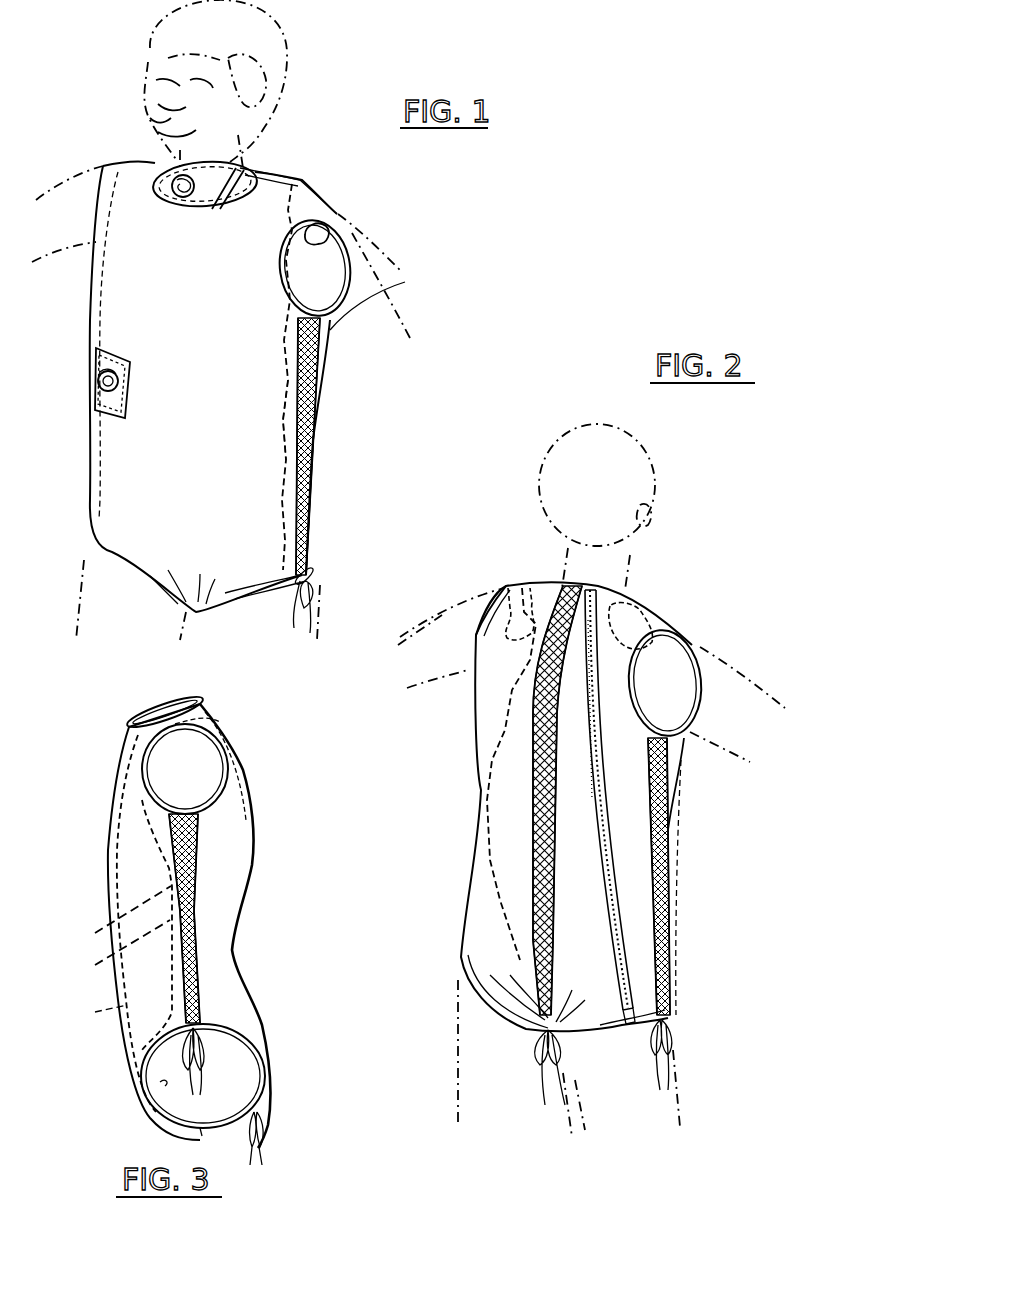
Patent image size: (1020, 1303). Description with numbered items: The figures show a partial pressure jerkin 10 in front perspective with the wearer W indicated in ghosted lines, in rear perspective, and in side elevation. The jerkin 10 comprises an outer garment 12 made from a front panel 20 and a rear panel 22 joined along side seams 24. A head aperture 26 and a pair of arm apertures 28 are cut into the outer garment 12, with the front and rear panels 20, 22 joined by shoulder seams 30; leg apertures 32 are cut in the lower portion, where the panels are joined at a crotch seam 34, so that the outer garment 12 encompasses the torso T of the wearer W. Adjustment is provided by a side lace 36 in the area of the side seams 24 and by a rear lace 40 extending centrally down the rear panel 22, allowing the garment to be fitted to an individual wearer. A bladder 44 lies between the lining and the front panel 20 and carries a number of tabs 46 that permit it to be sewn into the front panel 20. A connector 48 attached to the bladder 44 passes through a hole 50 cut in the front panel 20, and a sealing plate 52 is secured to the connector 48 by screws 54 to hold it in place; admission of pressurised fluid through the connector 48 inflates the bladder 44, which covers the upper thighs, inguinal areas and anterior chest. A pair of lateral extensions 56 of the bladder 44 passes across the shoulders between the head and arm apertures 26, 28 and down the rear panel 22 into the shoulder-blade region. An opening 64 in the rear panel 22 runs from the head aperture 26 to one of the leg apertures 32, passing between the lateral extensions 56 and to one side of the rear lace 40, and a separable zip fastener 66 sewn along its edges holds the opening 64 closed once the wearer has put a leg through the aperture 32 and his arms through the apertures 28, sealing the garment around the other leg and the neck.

In FIG. 1, the partial pressure jerkin 10 is at (322, 435).
In FIG. 2, the partial pressure jerkin 10 is at (576, 806).
In FIG. 3, the partial pressure jerkin 10 is at (248, 912).
In FIG. 3, the outer garment 12 is at (120, 748).
In FIG. 1, the front panel 20 is at (239, 353).
In FIG. 3, the front panel 20 is at (125, 860).
In FIG. 1, the rear panel 22 is at (322, 372).
In FIG. 3, the rear panel 22 is at (228, 864).
In FIG. 3, the side seams 24 is at (185, 814).
In FIG. 1, the head aperture 26 is at (190, 216).
In FIG. 3, the head aperture 26 is at (150, 708).
In FIG. 1, the arm apertures 28 is at (278, 296).
In FIG. 3, the arm apertures 28 is at (212, 750).
In FIG. 1, the shoulder seams 30 is at (290, 193).
In FIG. 3, the shoulder seams 30 is at (205, 718).
In FIG. 3, the leg apertures 32 is at (160, 1090).
In FIG. 3, the crotch seam 34 is at (200, 1140).
In FIG. 1, the side lace 36 is at (375, 298).
In FIG. 2, the side lace 36 is at (678, 780).
In FIG. 2, the rear lace 40 is at (533, 772).
In FIG. 1, the bladder 44 is at (300, 480).
In FIG. 2, the bladder 44 is at (488, 735).
In FIG. 3, the bladder 44 is at (95, 1014).
In FIG. 1, the tabs 46 is at (302, 525).
In FIG. 3, the tabs 46 is at (100, 960).
In FIG. 1, the connector 48 is at (95, 362).
In FIG. 1, the hole 50 is at (120, 362).
In FIG. 1, the sealing plate 52 is at (122, 400).
In FIG. 1, the screws 54 is at (93, 412).
In FIG. 1, the lateral extensions 56 is at (170, 198).
In FIG. 2, the lateral extensions 56 is at (522, 608).
In FIG. 2, the opening 64 is at (625, 798).
In FIG. 2, the separable zip fastener 66 is at (602, 830).
In FIG. 1, the wearer W is at (292, 72).
In FIG. 1, the torso T is at (199, 483).